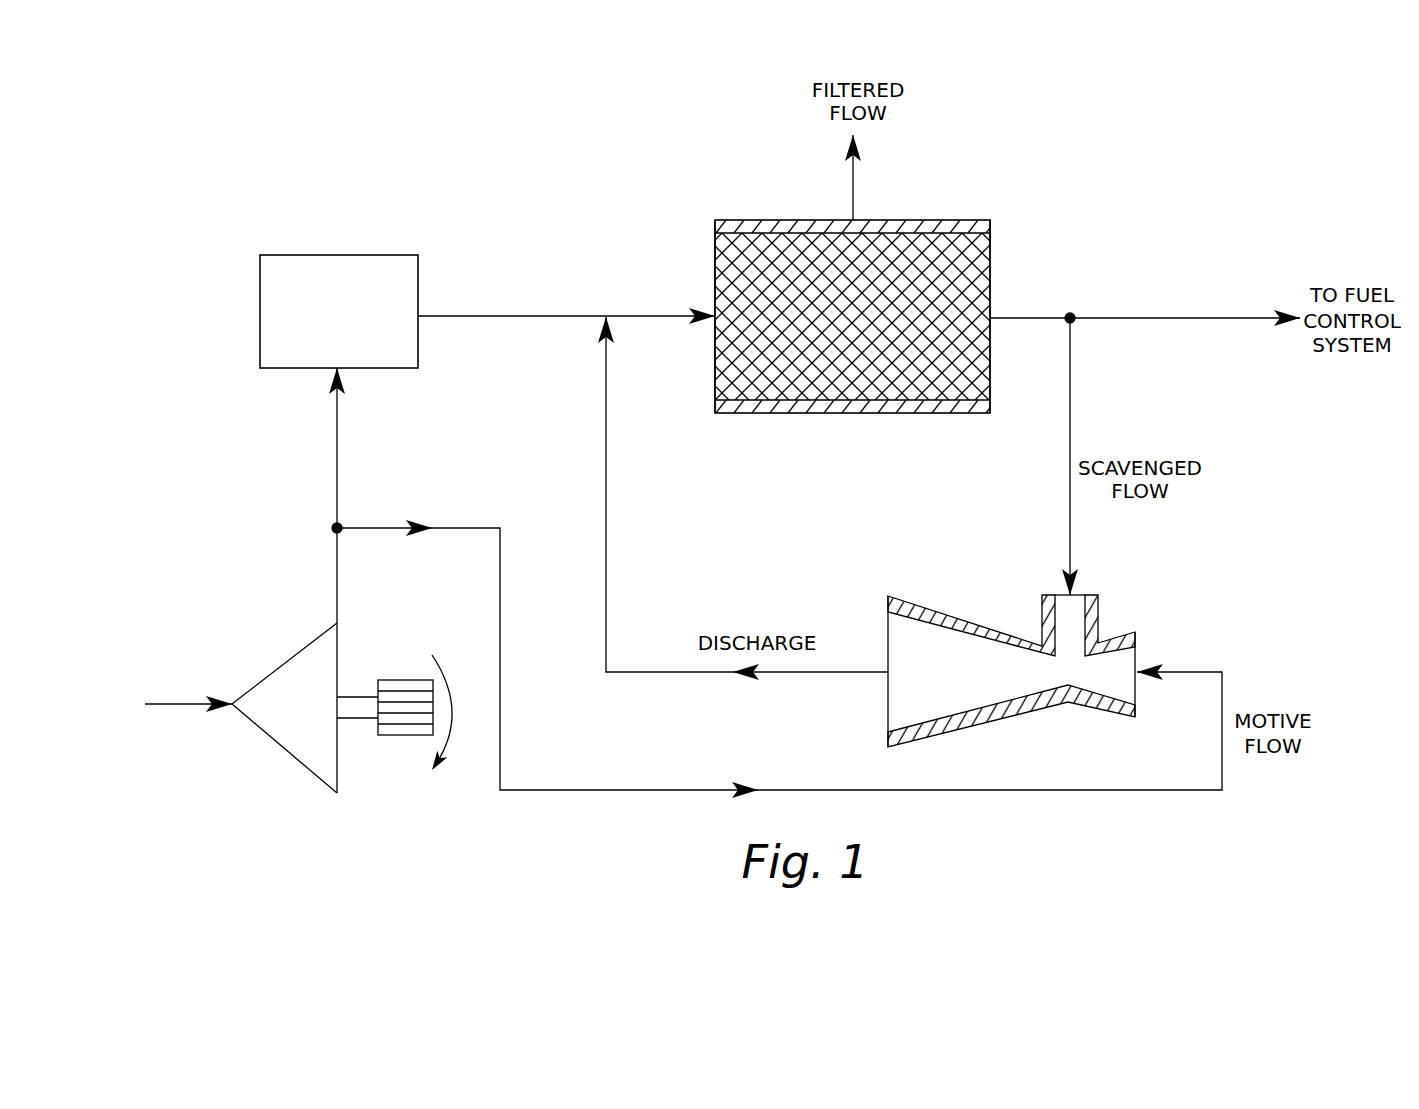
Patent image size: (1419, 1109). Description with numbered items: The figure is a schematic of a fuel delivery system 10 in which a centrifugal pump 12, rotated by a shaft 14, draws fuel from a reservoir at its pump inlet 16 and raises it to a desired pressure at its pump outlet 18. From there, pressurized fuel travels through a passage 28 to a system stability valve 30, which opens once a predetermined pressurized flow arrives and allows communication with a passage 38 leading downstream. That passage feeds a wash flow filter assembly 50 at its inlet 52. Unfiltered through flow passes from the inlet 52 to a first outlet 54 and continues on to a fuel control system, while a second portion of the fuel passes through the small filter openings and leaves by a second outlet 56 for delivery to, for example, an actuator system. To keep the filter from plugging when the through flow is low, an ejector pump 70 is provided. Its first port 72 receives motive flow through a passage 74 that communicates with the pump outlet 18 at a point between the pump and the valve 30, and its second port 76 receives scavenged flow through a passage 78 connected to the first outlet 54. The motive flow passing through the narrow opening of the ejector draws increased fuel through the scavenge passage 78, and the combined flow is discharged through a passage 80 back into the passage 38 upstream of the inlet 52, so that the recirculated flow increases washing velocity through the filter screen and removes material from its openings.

The fuel delivery system 10 is at (1198, 178).
The centrifugal pump 12 is at (276, 757).
The shaft 14 is at (357, 697).
The pump inlet 16 is at (230, 700).
The pump outlet 18 is at (337, 623).
The passage 28 is at (337, 472).
The system stability valve 30 is at (260, 312).
The passage 38 is at (512, 314).
The wash flow filter assembly 50 is at (746, 207).
The inlet 52 is at (712, 315).
The first outlet 54 is at (992, 318).
The second outlet 56 is at (855, 220).
The ejector pump 70 is at (1031, 727).
The first port 72 is at (1137, 670).
The passage 74 is at (670, 788).
The second port 76 is at (1075, 593).
The passage 78 is at (1068, 498).
The passage 80 is at (607, 552).